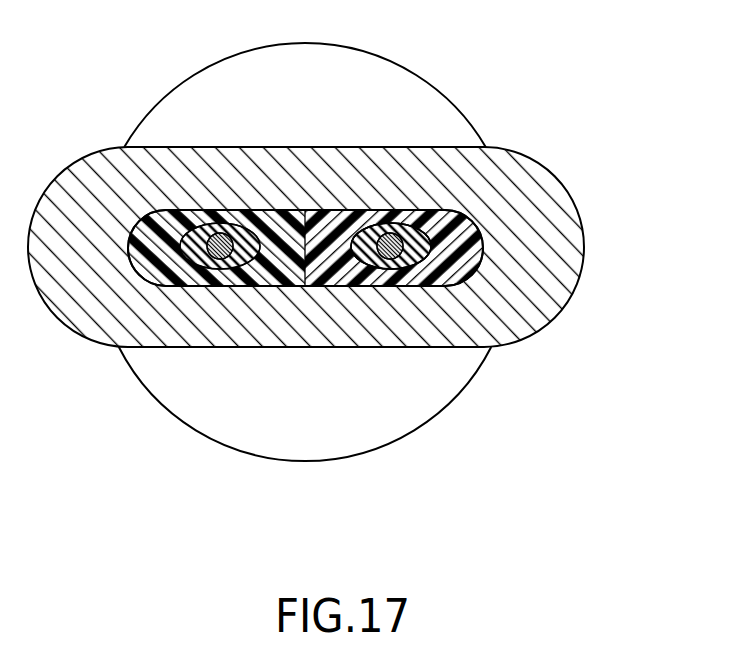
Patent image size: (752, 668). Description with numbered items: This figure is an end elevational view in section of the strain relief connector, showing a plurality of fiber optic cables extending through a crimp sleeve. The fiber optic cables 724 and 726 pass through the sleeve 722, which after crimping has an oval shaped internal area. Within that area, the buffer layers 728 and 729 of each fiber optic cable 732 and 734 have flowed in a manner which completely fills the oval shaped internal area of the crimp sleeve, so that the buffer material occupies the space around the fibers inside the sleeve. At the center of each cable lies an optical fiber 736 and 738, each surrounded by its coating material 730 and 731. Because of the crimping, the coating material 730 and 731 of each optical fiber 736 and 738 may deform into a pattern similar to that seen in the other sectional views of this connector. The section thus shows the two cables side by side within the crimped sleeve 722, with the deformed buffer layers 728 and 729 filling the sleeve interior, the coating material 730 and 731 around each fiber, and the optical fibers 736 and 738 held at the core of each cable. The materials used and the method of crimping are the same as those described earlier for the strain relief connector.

The sleeve 722 is at (584, 289).
The fiber optic cable 724 is at (468, 284).
The fiber optic cable 726 is at (127, 274).
The buffer layer 728 is at (419, 284).
The buffer layer 729 is at (288, 287).
The coating material 730 is at (438, 208).
The coating material 731 is at (220, 226).
The fiber optic cable 732 is at (486, 220).
The fiber optic cable 734 is at (272, 206).
The optical fiber 736 is at (358, 287).
The optical fiber 738 is at (207, 288).